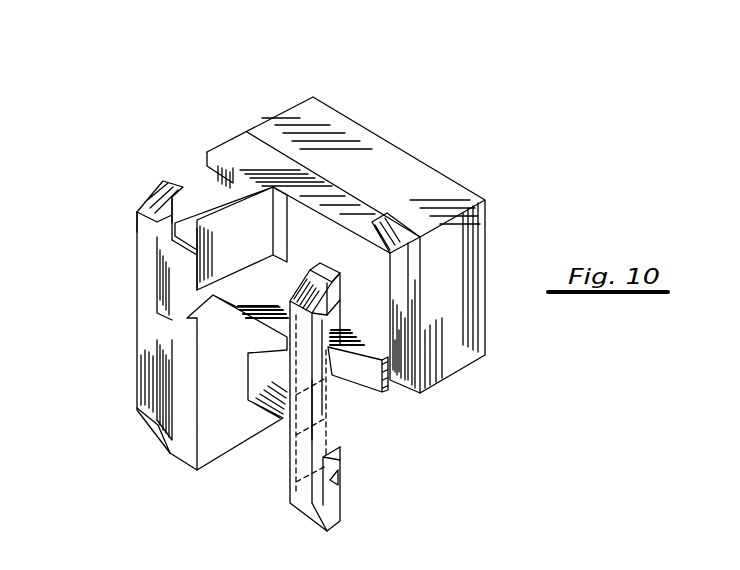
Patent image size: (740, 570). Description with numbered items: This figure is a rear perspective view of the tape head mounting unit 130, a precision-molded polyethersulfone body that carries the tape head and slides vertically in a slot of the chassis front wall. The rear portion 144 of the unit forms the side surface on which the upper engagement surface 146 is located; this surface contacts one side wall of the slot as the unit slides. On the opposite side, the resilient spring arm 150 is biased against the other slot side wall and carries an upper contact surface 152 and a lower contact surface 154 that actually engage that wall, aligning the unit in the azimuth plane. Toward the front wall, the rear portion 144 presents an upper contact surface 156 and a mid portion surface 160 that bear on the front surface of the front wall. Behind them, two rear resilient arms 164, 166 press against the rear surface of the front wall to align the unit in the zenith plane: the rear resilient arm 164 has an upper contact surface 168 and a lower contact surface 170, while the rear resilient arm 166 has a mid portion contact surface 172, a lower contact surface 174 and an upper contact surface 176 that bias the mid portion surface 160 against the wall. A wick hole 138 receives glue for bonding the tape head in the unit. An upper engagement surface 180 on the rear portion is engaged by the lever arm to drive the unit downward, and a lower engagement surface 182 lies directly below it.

The tape head mounting unit 130 is at (253, 99).
The wick hole 138 is at (322, 190).
The rear portion 144 is at (177, 247).
The upper engagement surface 146 is at (192, 192).
The resilient spring arm 150 is at (280, 268).
The upper contact surface 152 is at (347, 272).
The lower contact surface 154 is at (332, 473).
The upper contact surface 156 is at (204, 164).
The mid portion surface 160 is at (360, 395).
The rear resilient arm 164 is at (138, 284).
The rear resilient arm 166 is at (300, 472).
The upper contact surface 168 is at (167, 178).
The lower contact surface 170 is at (153, 440).
The mid portion contact surface 172 is at (337, 410).
The lower contact surface 174 is at (345, 510).
The upper contact surface 176 is at (345, 292).
The upper engagement surface 180 is at (183, 326).
The lower engagement surface 182 is at (227, 340).